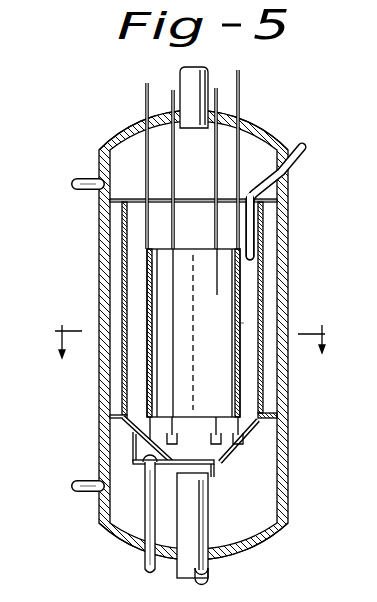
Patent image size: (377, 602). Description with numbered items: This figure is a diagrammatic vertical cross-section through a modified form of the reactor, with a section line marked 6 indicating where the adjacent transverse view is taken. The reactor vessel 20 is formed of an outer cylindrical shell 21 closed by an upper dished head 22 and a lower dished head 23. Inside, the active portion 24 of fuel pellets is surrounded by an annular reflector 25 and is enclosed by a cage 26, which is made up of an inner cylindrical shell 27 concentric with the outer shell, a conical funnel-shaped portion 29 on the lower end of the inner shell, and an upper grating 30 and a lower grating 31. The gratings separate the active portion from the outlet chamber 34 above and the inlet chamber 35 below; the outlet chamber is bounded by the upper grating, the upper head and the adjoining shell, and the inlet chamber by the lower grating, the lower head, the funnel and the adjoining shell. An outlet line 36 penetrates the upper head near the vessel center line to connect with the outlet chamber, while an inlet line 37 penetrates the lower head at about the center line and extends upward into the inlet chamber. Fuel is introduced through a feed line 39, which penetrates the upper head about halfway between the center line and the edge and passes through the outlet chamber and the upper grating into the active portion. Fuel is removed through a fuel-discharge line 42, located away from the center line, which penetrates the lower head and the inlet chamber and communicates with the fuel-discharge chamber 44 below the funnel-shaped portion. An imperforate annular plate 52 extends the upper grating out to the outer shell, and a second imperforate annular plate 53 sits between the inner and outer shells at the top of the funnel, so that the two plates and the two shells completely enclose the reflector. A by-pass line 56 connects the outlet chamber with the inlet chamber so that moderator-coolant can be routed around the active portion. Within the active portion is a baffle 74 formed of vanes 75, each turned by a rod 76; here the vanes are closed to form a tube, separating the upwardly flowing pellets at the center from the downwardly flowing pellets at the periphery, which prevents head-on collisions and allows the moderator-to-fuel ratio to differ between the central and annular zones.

The reactor vessel 20 is at (174, 329).
The outer cylindrical shell 21 is at (103, 257).
The upper dished head 22 is at (262, 122).
The lower dished head 23 is at (288, 542).
The active portion 24 is at (205, 347).
The annular reflector 25 is at (118, 287).
The cage 26 is at (263, 298).
The inner cylindrical shell 27 is at (267, 250).
The funnel-shaped portion 29 is at (227, 443).
The upper grating 30 is at (187, 203).
The lower grating 31 is at (214, 470).
The outlet chamber 34 is at (199, 189).
The inlet chamber 35 is at (247, 511).
The outlet line 36 is at (190, 78).
The inlet line 37 is at (209, 573).
The feed line 39 is at (299, 157).
The fuel-discharge line 42 is at (148, 502).
The fuel-discharge chamber 44 is at (142, 448).
The imperforate annular plate 52 is at (275, 203).
The imperforate annular plate 53 is at (113, 416).
The by-pass line 56 is at (88, 188).
The baffle 74 is at (244, 323).
The vanes 75 is at (172, 310).
The rod 76 is at (240, 158).
The section line 6- 6 is at (184, 341).